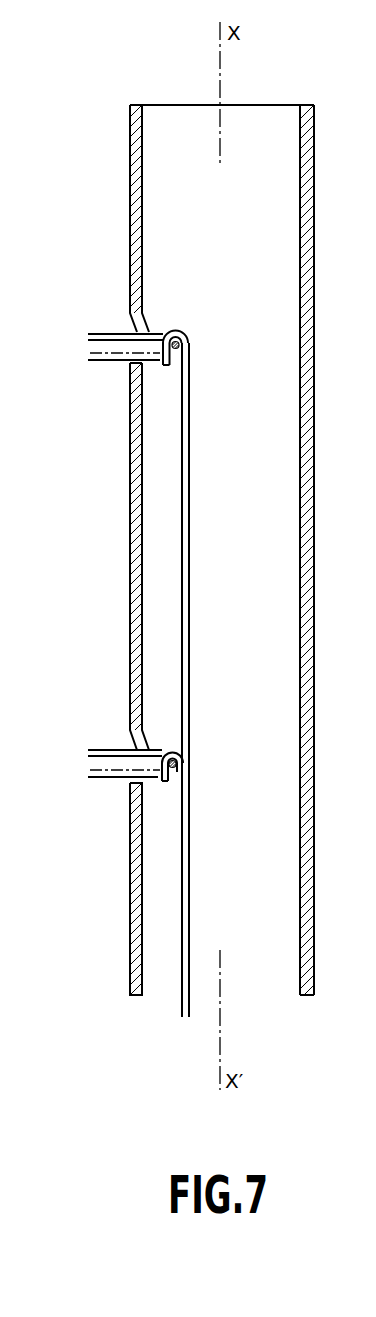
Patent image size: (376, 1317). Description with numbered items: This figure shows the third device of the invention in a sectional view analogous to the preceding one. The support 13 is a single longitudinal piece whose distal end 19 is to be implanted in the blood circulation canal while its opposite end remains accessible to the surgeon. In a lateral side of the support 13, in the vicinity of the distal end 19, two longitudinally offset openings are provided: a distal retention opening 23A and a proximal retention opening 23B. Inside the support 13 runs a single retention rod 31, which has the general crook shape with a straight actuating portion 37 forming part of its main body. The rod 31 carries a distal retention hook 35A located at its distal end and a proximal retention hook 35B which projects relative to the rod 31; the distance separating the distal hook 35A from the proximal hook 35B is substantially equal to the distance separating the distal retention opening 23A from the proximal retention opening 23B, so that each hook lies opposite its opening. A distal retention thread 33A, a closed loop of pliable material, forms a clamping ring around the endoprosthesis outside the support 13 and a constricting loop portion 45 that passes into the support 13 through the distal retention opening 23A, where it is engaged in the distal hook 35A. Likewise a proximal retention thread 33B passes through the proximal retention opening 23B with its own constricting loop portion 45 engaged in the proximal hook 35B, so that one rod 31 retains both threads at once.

The distal end 19 is at (130, 133).
The support 13 is at (130, 577).
The distal retention opening 23A is at (130, 320).
The proximal retention opening 23B is at (130, 738).
The constricting loop portion 45 is at (117, 346).
The distal retention thread 33A is at (203, 322).
The proximal retention thread 33B is at (178, 742).
The distal retention hook 35A is at (188, 337).
The proximal retention hook 35B is at (189, 757).
The straight actuating portion 37 is at (190, 930).
The retention rod 31 is at (198, 982).